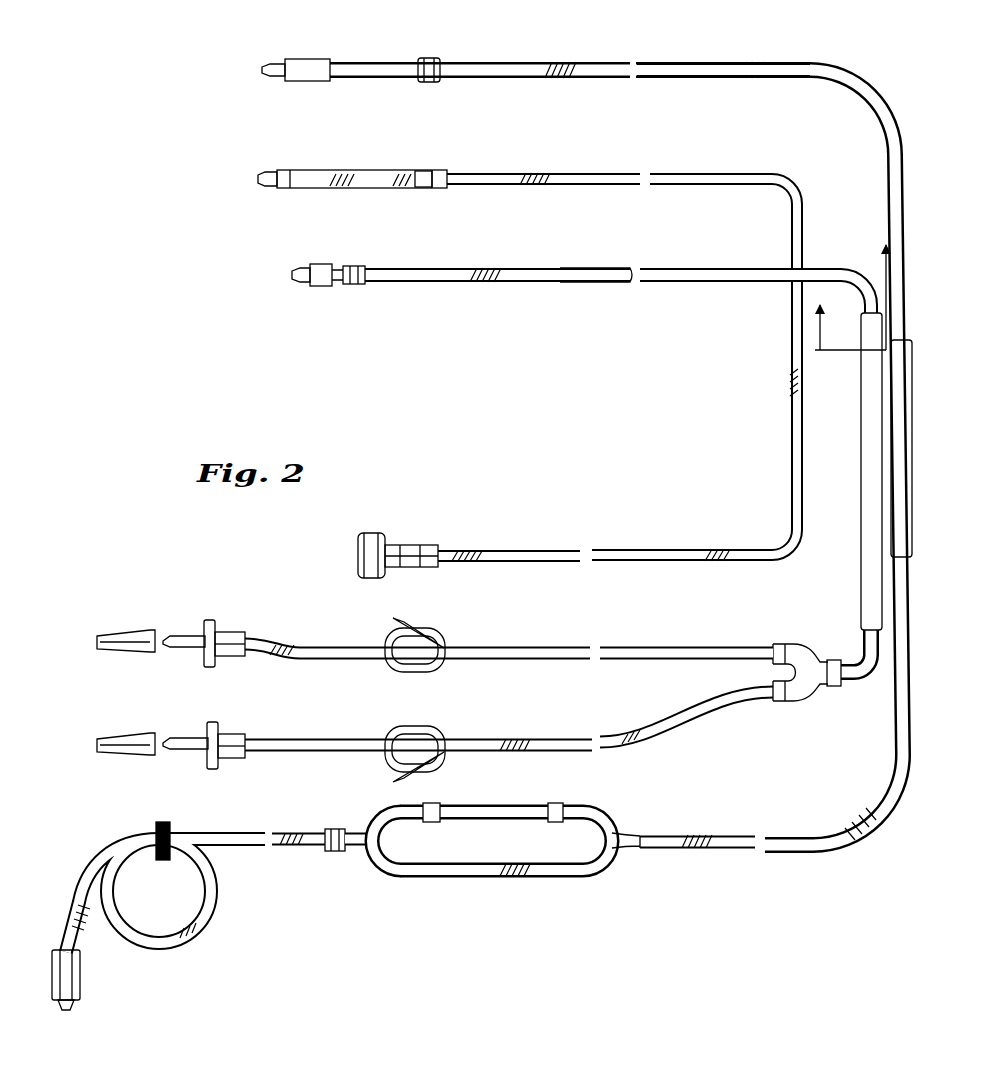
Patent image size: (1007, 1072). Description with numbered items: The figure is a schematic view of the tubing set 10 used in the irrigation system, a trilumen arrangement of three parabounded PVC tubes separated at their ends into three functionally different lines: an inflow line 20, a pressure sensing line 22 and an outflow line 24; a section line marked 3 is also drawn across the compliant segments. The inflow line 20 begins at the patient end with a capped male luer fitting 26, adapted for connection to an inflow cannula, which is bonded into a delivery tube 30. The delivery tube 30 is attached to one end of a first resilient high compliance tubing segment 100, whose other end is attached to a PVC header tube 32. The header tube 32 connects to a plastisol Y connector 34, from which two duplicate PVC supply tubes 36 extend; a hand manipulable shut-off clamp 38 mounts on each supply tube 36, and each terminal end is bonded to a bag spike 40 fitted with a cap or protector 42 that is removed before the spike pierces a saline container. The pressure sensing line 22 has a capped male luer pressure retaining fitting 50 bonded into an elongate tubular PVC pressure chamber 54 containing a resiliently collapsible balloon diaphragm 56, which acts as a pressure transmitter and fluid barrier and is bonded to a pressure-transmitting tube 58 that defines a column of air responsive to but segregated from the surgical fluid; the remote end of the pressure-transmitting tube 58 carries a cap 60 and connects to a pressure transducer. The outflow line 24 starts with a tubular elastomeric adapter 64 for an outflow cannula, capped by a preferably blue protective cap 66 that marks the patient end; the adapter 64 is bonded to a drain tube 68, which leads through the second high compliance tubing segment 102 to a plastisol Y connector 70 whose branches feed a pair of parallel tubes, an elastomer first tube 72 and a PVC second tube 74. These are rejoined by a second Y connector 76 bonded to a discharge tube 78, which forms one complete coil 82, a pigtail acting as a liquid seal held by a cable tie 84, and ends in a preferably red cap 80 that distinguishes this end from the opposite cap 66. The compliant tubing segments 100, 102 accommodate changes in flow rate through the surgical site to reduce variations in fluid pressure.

The tubing set 10 is at (315, 342).
The inflow line 20 is at (517, 265).
The pressure sensing line 22 is at (607, 172).
The outflow line 24 is at (598, 60).
The capped male luer fitting 26 is at (305, 262).
The delivery tube 30 is at (606, 283).
The header tube 32 is at (858, 672).
The Y connector 34 is at (797, 642).
The supply tubes 36 is at (568, 655).
The shut-off clamp 38 is at (430, 672).
The bag spike 40 is at (203, 656).
The cap or protector 42 is at (135, 655).
The capped male luer pressure retaining fitting 50 is at (264, 172).
The pressure chamber 54 is at (316, 170).
The balloon diaphragm 56 is at (386, 172).
The pressure-transmitting tube 58 is at (712, 172).
The cap 60 is at (408, 545).
The tubular elastomeric adapter 64 is at (387, 62).
The protective cap 66 is at (310, 60).
The drain tube 68 is at (687, 62).
The Y connector 70 is at (613, 832).
The first tube 72 is at (482, 816).
The second tube 74 is at (482, 872).
The second Y connector 76 is at (372, 866).
The discharge tube 78 is at (243, 840).
The cap 80 is at (75, 968).
The coil 82 is at (210, 896).
The cable tie 84 is at (155, 826).
The first resilient tubing segment 100 is at (868, 458).
The second tubing segment 102 is at (900, 410).
The section line 3- 3 is at (850, 292).